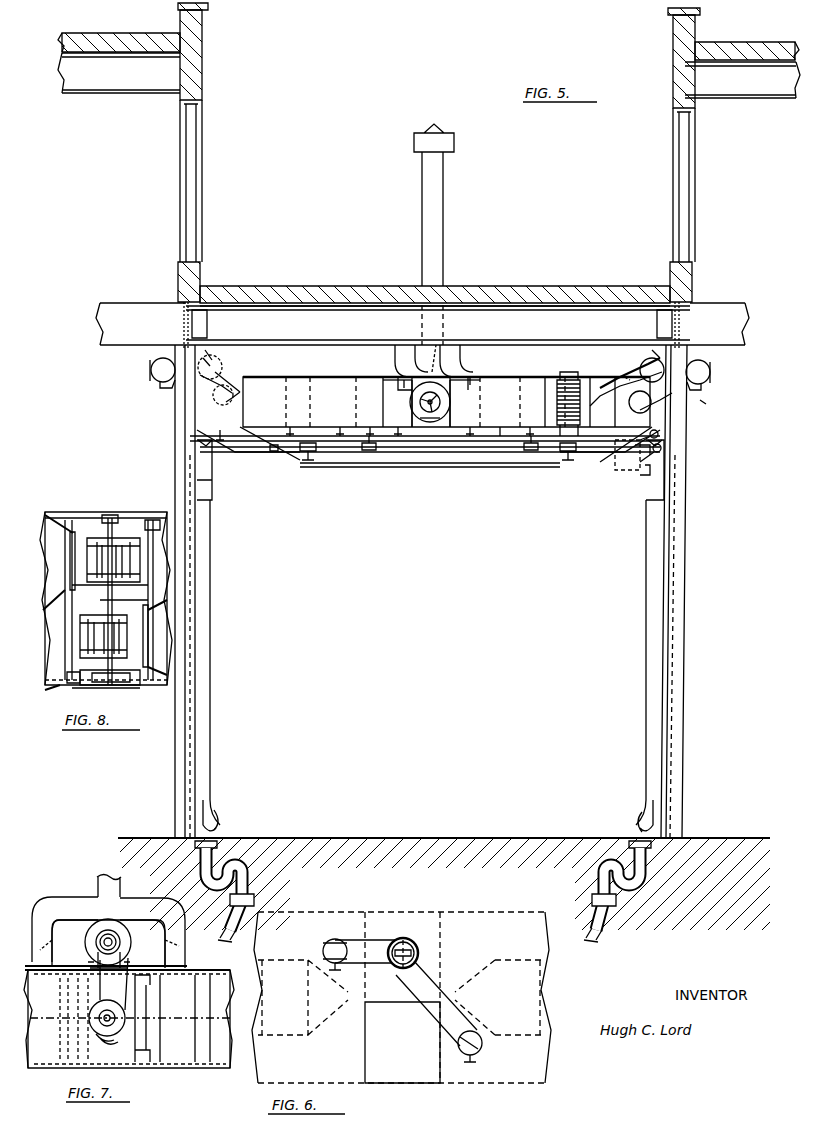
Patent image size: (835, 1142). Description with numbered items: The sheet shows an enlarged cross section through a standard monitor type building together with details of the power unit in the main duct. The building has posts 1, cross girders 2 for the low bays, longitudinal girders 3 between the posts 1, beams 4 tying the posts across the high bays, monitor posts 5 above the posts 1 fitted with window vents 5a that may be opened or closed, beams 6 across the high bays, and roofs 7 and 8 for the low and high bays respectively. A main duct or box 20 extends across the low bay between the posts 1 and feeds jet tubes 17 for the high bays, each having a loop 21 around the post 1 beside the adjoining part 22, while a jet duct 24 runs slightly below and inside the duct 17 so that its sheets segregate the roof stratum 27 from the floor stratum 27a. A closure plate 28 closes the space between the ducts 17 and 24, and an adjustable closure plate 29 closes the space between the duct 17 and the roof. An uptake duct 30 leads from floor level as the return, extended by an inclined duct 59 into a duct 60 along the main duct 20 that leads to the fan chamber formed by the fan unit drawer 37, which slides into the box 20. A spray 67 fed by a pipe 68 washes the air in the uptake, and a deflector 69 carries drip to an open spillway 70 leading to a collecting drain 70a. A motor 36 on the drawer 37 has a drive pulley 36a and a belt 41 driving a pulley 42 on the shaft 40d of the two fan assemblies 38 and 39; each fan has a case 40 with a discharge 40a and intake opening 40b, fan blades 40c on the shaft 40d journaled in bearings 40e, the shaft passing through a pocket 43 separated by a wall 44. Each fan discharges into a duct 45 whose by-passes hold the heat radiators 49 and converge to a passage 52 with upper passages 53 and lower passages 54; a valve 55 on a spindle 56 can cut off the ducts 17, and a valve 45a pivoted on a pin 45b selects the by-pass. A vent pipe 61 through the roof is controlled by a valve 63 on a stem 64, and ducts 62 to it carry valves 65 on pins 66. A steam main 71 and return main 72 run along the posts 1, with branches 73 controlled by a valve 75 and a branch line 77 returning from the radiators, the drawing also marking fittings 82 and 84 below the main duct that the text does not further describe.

In FIG. 5, the posts 1 is at (178, 414).
In FIG. 5, the cross girders 2 is at (262, 318).
In FIG. 5, the longitudinal girders 3 is at (182, 308).
In FIG. 5, the beams 4 is at (120, 338).
In FIG. 5, the monitor posts 5 is at (180, 128).
In FIG. 5, the window vents 5a is at (196, 172).
In FIG. 5, the beams 6 is at (122, 90).
In FIG. 5, the roof 7 is at (552, 292).
In FIG. 5, the roof 8 is at (112, 44).
In FIG. 7, the roof 8 is at (128, 1019).
In FIG. 5, the jet tubes 17 is at (216, 368).
In FIG. 5, the main duct 20 is at (342, 377).
In FIG. 8, the main duct 20 is at (60, 688).
In FIG. 7, the main duct 20 is at (212, 970).
In FIG. 6, the main duct 20 is at (300, 916).
In FIG. 5, the loop 21 is at (166, 384).
In FIG. 5, the guide roller 22 is at (152, 372).
In FIG. 5, the jet duct 24 is at (222, 395).
In FIG. 5, the roof stratum 27 is at (315, 365).
In FIG. 5, the floor stratum 27a is at (360, 785).
In FIG. 5, the closure plate 28 is at (236, 382).
In FIG. 5, the adjustable closure plate 29 is at (214, 355).
In FIG. 5, the uptake duct 30 is at (212, 616).
In FIG. 7, the motor 36 is at (88, 948).
In FIG. 7, the drive pulley 36a is at (120, 938).
In FIG. 8, the fan unit drawer 37 is at (66, 688).
In FIG. 7, the fan unit drawer 37 is at (64, 1068).
In FIG. 8, the fan assembly 38 is at (82, 650).
In FIG. 8, the fan assembly 39 is at (124, 540).
In FIG. 5, the case 40 is at (426, 420).
In FIG. 8, the case 40 is at (88, 585).
In FIG. 8, the discharge 40a is at (70, 566).
In FIG. 8, the intake opening 40b is at (98, 526).
In FIG. 8, the fan blades 40c is at (158, 516).
In FIG. 5, the shaft 40d is at (420, 402).
In FIG. 8, the shaft 40d is at (112, 520).
In FIG. 8, the bearings 40e is at (104, 512).
In FIG. 7, the belt 41 is at (122, 950).
In FIG. 8, the pulley 42 is at (118, 685).
In FIG. 7, the pulley 42 is at (116, 1040).
In FIG. 8, the pocket 43 is at (92, 686).
In FIG. 8, the wall 44 is at (143, 650).
In FIG. 5, the duct 45 is at (470, 392).
In FIG. 5, the valve 45a is at (456, 430).
In FIG. 5, the pin 45b is at (470, 442).
In FIG. 5, the heat radiators 49 is at (568, 378).
In FIG. 5, the passage 52 is at (616, 372).
In FIG. 5, the upper passages 53 is at (621, 370).
In FIG. 5, the lower passages 54 is at (637, 455).
In FIG. 5, the valve 55 is at (630, 402).
In FIG. 5, the spindle 56 is at (624, 394).
In FIG. 5, the inclined duct 59 is at (252, 452).
In FIG. 5, the duct 60 is at (366, 377).
In FIG. 5, the vent pipe 61 is at (424, 233).
In FIG. 7, the vent pipe 61 is at (121, 879).
In FIG. 6, the vent pipe 61 is at (412, 944).
In FIG. 5, the by-pass ducts 62 is at (400, 352).
In FIG. 7, the by-pass ducts 62 is at (80, 896).
In FIG. 6, the by-pass ducts 62 is at (352, 942).
In FIG. 5, the valve 63 is at (440, 348).
In FIG. 6, the valve 63 is at (400, 958).
In FIG. 6, the stem 64 is at (406, 938).
In FIG. 5, the valves 65 is at (478, 366).
In FIG. 7, the valves 65 is at (52, 942).
In FIG. 6, the valves 65 is at (323, 950).
In FIG. 5, the pins 66 is at (420, 402).
In FIG. 7, the pins 66 is at (38, 902).
In FIG. 6, the pins 66 is at (338, 940).
In FIG. 5, the spray 67 is at (214, 496).
In FIG. 5, the pipe 68 is at (276, 453).
In FIG. 5, the deflector 69 is at (216, 824).
In FIG. 5, the spillway 70 is at (212, 838).
In FIG. 5, the collecting drain 70a is at (252, 914).
In FIG. 5, the steam main 71 is at (660, 432).
In FIG. 5, the return main 72 is at (662, 448).
In FIG. 5, the branches 73 is at (430, 425).
In FIG. 5, the valve 75 is at (372, 452).
In FIG. 5, the branch line 77 is at (502, 456).
In FIG. 5, the fitting 82 is at (223, 422).
In FIG. 5, the valve 84 is at (312, 462).